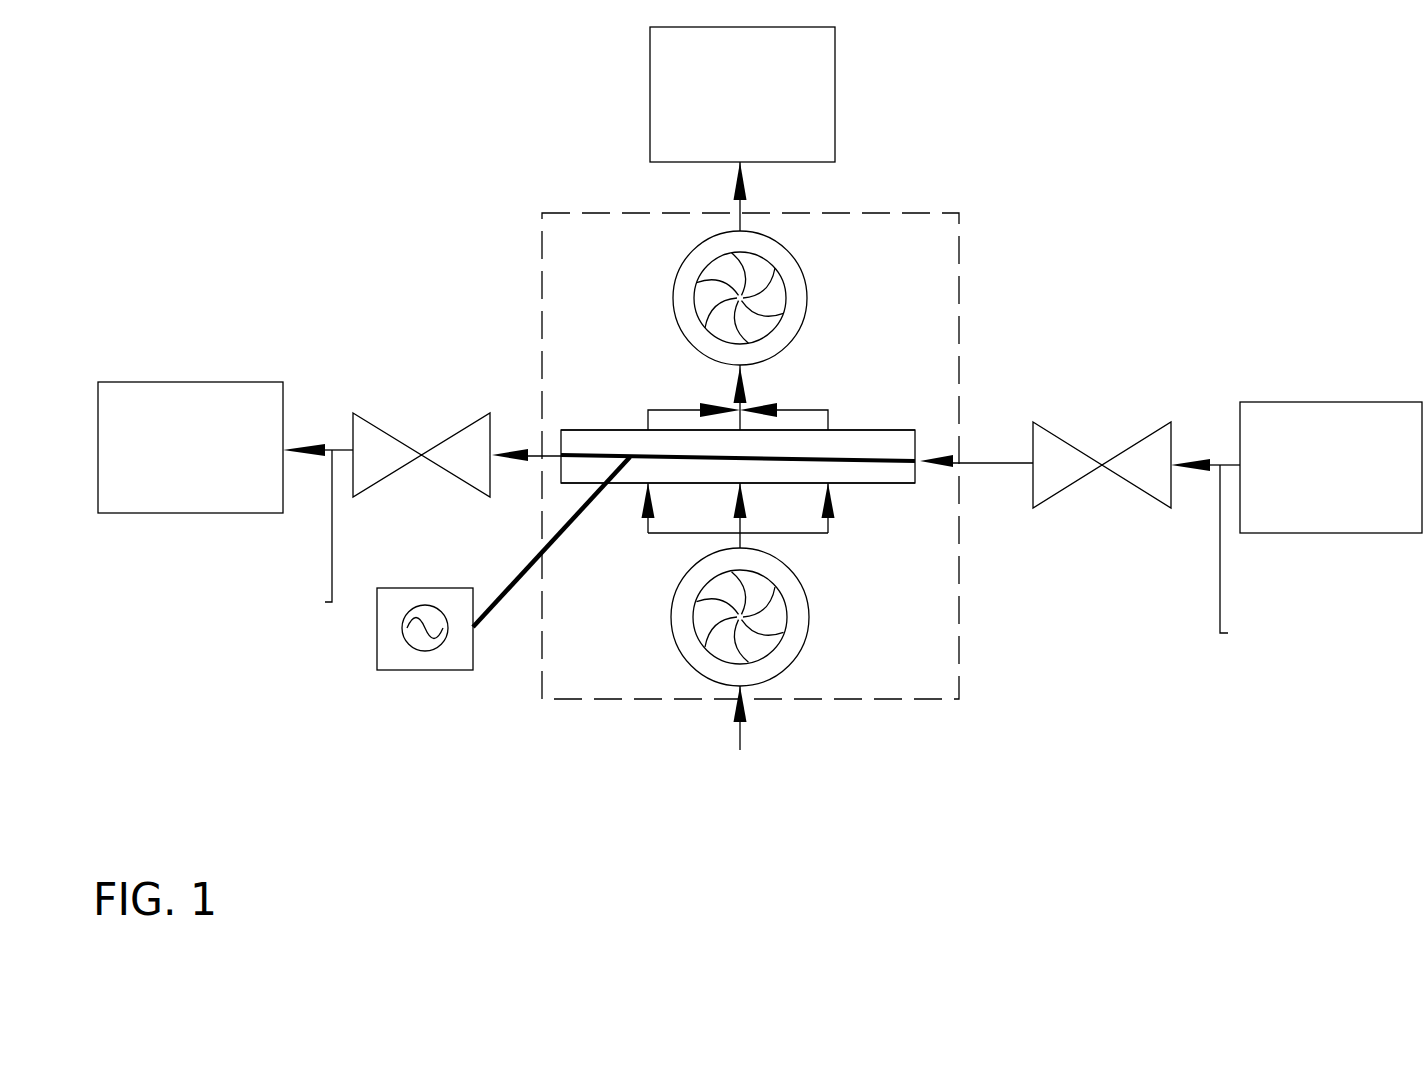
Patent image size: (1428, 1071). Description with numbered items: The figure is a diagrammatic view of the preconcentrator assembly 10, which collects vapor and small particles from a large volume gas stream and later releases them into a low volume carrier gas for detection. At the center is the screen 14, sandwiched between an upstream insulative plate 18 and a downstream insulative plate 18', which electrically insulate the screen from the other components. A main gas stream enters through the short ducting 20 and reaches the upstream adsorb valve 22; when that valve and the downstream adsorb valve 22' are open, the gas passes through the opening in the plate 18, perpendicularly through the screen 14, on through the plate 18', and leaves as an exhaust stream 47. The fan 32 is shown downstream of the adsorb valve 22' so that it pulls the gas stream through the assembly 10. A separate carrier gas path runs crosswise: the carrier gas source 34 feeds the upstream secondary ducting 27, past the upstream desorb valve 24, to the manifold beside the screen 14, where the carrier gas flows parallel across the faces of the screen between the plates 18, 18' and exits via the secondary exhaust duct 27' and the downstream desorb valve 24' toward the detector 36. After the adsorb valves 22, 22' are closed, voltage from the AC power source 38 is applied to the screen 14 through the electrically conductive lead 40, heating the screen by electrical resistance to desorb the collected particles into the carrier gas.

The preconcentrator assembly 10 is at (957, 663).
The screen 14 is at (852, 458).
The upstream insulative plate 18 is at (805, 581).
The downstream insulative plate 18' is at (682, 315).
The ducting 20 is at (740, 732).
The upstream adsorb valve 22 is at (802, 646).
The downstream adsorb valve 22' is at (807, 279).
The upstream desorb valve 24 is at (1136, 415).
The downstream desorb valve 24' is at (386, 373).
The upstream secondary ducting 27 is at (1242, 558).
The secondary exhaust duct 27' is at (305, 535).
The fan 32 is at (782, 90).
The carrier gas source 34 is at (1285, 438).
The detector 36 is at (215, 420).
The AC power source 38 is at (387, 663).
The electrically conductive lead 40 is at (553, 537).
The exhaust stream 47 is at (735, 180).